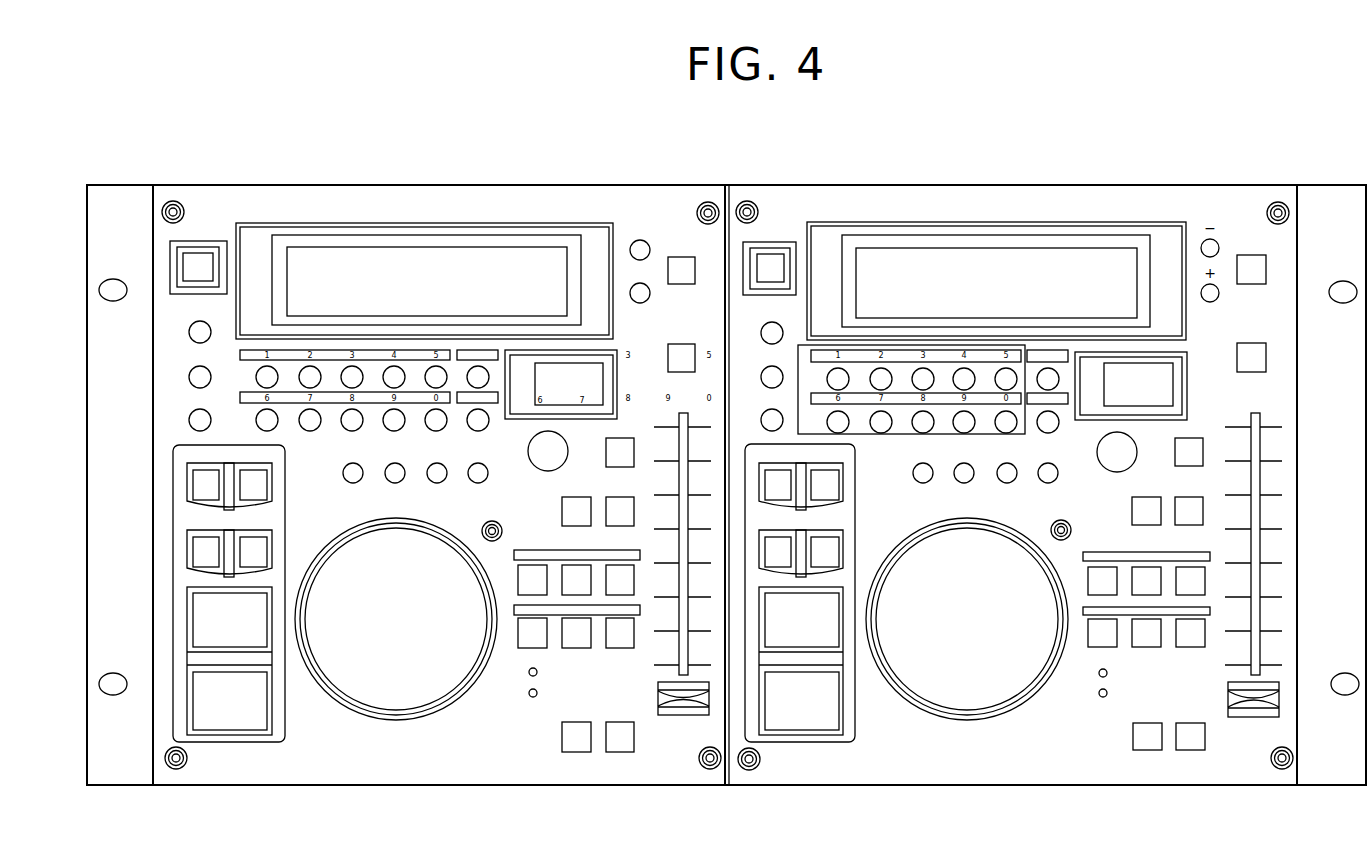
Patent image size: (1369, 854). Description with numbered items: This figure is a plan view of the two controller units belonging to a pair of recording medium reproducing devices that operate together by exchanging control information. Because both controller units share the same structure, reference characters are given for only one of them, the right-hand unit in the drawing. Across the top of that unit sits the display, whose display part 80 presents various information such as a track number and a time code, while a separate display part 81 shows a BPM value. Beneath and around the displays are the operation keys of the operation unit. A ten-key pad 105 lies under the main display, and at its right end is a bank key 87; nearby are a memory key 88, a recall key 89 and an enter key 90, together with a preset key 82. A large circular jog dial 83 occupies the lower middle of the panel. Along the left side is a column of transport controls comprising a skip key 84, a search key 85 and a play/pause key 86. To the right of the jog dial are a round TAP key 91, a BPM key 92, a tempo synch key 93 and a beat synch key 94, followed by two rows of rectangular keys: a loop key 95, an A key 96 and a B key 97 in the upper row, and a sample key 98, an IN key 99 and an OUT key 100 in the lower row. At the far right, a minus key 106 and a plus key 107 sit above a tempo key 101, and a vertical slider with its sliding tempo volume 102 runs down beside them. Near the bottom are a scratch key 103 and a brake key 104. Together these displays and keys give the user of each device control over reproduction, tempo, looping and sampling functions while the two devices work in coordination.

The display part 80 is at (1127, 255).
The display part 81 is at (1174, 390).
The preset key 82 is at (923, 483).
The jog dial 83 is at (964, 705).
The skip key 84 is at (840, 507).
The search key 85 is at (843, 537).
The play/pause key 86 is at (814, 715).
The bank key 87 is at (1048, 366).
The memory key 88 is at (964, 483).
The recall key 89 is at (1007, 483).
The enter key 90 is at (1048, 483).
The TAP key 91 is at (1108, 463).
The BPM key 92 is at (1175, 440).
The tempo synch key 93 is at (1154, 498).
The beat synch key 94 is at (1191, 498).
The loop key 95 is at (1088, 570).
The A key 96 is at (1148, 565).
The B key 97 is at (1199, 573).
The sample key 98 is at (1087, 647).
The IN key 99 is at (1139, 647).
The OUT key 100 is at (1190, 647).
The tempo key 101 is at (1250, 342).
The tempo volume 102 is at (1280, 693).
The scratch key 103 is at (1133, 728).
The brake key 104 is at (1204, 740).
The ten-key pad 105 is at (885, 437).
The minus key 106 is at (1216, 245).
The plus key 107 is at (1216, 292).